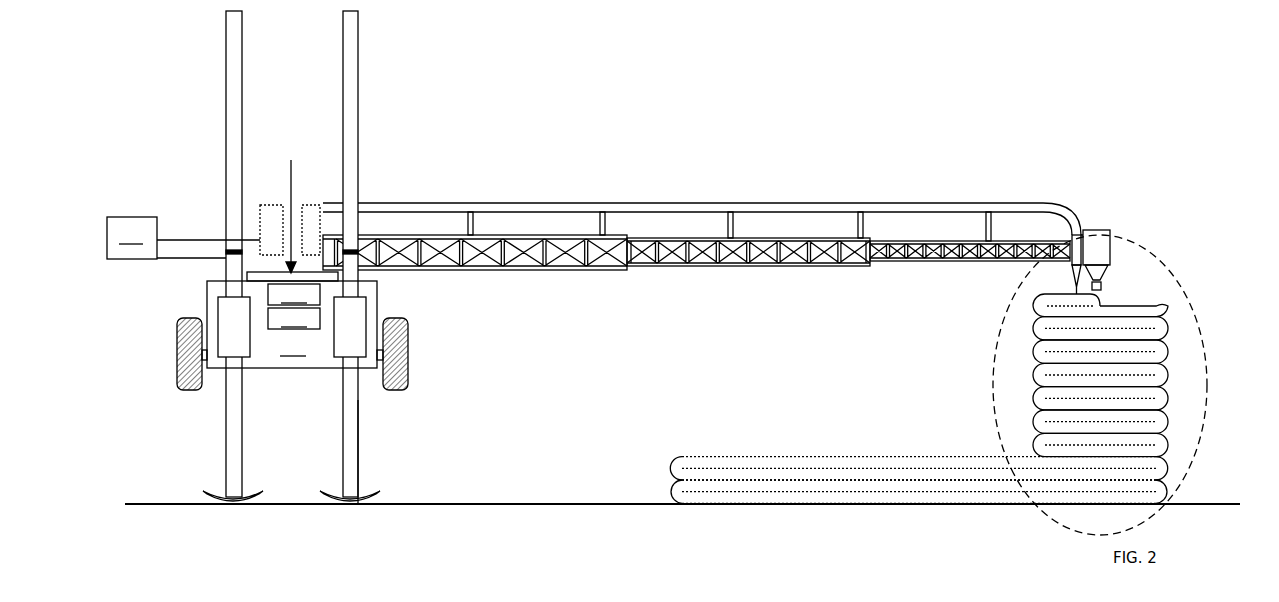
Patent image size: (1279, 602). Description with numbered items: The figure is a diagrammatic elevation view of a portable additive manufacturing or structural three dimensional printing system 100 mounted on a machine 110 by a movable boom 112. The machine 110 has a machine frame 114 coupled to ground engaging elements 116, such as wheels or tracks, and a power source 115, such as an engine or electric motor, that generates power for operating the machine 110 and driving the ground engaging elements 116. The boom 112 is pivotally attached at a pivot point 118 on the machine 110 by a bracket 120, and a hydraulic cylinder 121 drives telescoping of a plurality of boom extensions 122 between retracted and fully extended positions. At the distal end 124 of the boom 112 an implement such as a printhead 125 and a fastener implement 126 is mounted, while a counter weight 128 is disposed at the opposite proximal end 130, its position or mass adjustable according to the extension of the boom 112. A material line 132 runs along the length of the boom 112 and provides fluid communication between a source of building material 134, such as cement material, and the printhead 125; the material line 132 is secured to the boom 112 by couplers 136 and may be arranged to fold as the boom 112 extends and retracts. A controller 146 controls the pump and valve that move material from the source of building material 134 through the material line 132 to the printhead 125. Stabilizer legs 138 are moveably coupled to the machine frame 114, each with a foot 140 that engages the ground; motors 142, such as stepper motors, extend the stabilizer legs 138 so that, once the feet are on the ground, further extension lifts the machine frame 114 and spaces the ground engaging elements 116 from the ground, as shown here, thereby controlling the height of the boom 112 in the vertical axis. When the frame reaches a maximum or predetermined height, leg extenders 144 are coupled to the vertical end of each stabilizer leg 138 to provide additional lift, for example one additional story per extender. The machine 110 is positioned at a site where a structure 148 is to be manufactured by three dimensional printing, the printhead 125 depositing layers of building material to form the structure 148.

The printing system 100 is at (667, 103).
The machine 110 is at (176, 299).
The boom 112 is at (503, 277).
The machine frame 114 is at (292, 324).
The power source 115 is at (294, 294).
The controller 146 is at (294, 318).
The ground engaging elements 116 is at (172, 347).
The pivot point 118 is at (292, 206).
The bracket 120 is at (262, 270).
The hydraulic cylinder 121 is at (315, 203).
The boom extensions 122 is at (644, 268).
The distal end 124 is at (1115, 255).
The printhead 125 is at (1110, 236).
The fastener implement 126 is at (1073, 273).
The counter weight 128 is at (132, 238).
The proximal end 130 is at (127, 216).
The material line 132 is at (534, 203).
The source of building material 134 is at (270, 203).
The couplers 136 is at (472, 203).
The stabilizer legs 138 is at (357, 450).
The foot 140 is at (356, 505).
The motors 142 is at (363, 322).
The leg extenders 144 is at (350, 175).
The structure 148 is at (1170, 362).